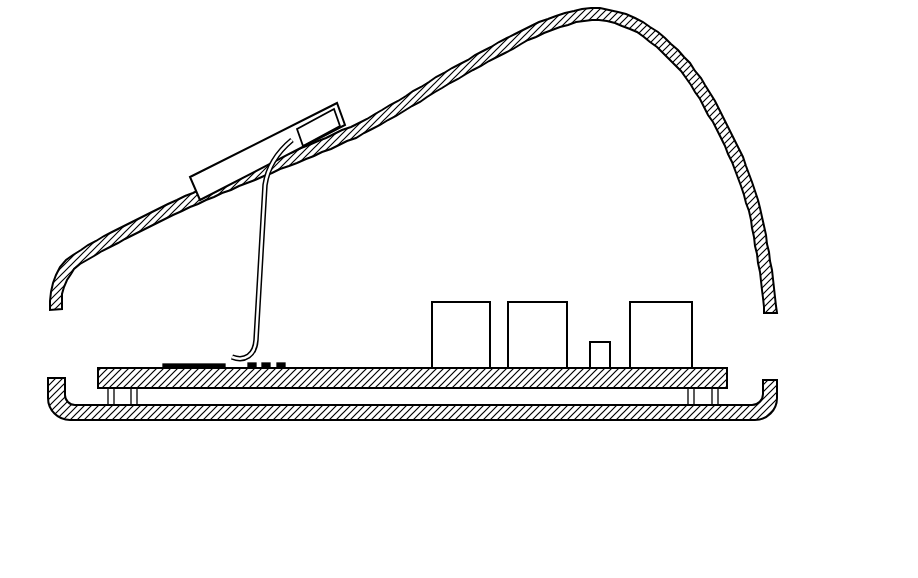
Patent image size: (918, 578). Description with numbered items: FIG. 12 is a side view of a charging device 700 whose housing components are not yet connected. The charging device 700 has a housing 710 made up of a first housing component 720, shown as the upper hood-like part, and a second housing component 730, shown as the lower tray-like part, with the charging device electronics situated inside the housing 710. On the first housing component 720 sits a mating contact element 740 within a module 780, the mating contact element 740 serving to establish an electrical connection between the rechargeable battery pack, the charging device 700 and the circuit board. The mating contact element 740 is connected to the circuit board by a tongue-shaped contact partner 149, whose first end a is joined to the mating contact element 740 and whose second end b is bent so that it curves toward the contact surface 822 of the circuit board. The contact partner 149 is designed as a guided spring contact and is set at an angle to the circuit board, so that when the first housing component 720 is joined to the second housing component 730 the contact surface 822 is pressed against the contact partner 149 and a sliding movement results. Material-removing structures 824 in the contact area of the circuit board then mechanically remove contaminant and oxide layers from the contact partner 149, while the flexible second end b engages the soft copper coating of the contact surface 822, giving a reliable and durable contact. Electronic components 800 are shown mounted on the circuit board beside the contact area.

The charging device 700 is at (146, 112).
The housing 710 is at (824, 240).
The first housing component 720 is at (771, 240).
The second housing component 730 is at (778, 385).
The mating contact element 740 is at (318, 128).
The sensor module housing 780 is at (297, 102).
The tongue-shaped contact partner 149 is at (270, 193).
The electronic components 800 is at (505, 268).
The contact surface 822 is at (177, 362).
The material-removing structures 824 is at (270, 348).
The first end a is at (290, 150).
The second end b is at (236, 357).